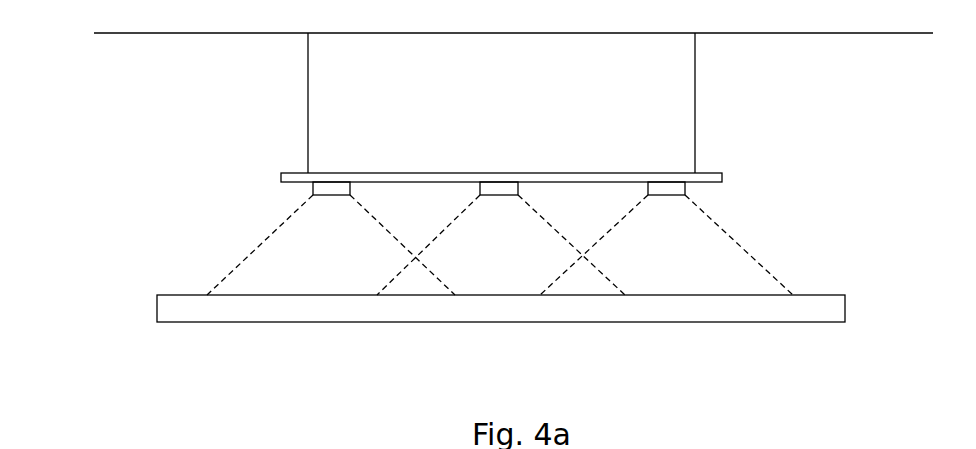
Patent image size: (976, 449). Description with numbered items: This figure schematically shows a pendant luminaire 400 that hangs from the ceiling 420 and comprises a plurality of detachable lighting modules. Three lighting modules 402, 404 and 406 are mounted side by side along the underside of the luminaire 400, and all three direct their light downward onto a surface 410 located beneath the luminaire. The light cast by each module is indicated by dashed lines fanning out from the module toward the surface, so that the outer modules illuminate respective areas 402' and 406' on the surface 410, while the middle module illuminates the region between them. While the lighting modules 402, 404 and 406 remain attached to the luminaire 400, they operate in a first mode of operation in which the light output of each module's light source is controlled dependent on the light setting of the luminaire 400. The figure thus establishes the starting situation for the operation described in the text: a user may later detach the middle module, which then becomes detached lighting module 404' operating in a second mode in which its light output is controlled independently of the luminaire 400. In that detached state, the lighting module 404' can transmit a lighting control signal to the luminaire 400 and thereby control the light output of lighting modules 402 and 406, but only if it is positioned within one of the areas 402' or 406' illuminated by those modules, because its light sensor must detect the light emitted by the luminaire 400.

The pendant luminaire 400 is at (281, 178).
The lighting module 402 is at (356, 141).
The lighting module 404 is at (525, 141).
The lighting module 406 is at (698, 141).
The area illuminated by lighting module 402' is at (256, 326).
The detached lighting module 404' is at (438, 326).
The area illuminated by lighting module 406' is at (625, 326).
The surface 410 is at (157, 305).
The ceiling 420 is at (802, 33).